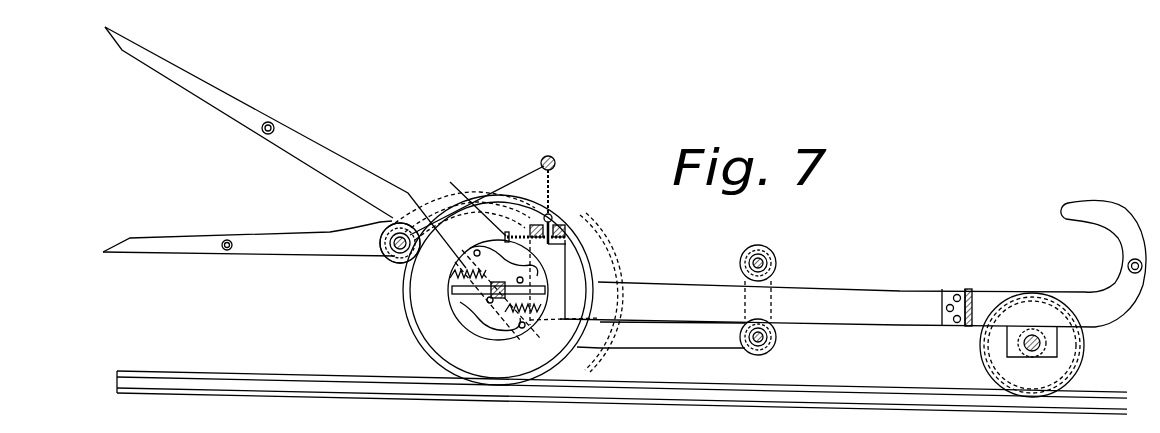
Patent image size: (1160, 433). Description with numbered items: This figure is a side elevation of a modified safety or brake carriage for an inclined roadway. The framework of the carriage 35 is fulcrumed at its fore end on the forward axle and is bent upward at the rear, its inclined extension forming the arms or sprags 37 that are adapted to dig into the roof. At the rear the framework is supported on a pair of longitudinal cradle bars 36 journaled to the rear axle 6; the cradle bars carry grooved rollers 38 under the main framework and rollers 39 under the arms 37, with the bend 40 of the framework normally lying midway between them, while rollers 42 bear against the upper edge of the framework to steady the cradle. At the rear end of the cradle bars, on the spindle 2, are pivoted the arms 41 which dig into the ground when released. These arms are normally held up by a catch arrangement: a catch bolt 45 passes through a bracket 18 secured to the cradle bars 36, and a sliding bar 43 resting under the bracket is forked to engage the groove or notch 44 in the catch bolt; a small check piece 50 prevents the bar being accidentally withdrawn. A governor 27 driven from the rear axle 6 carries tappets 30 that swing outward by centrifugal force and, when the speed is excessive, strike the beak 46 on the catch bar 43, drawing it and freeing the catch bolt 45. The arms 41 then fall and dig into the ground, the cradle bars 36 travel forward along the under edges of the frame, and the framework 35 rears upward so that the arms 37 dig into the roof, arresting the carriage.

The spindle 2 is at (392, 243).
The rear axle 6 is at (478, 311).
The bracket 18 is at (562, 228).
The governor 27 is at (528, 322).
The tappets 30 is at (455, 278).
The framework of the carriage 35 is at (873, 300).
The cradle bars 36 is at (642, 338).
The arms or sprags 37 is at (337, 160).
The grooved rollers 38 is at (777, 342).
The grooved rollers 39 is at (392, 262).
The bend in the framework 40 is at (600, 282).
The arms 41 is at (287, 246).
The rollers 42 is at (776, 259).
The sliding bar 43 is at (516, 236).
The groove or notch 44 is at (565, 282).
The catch bolt 45 is at (553, 216).
The beak 46 is at (465, 200).
The check piece 50 is at (567, 242).